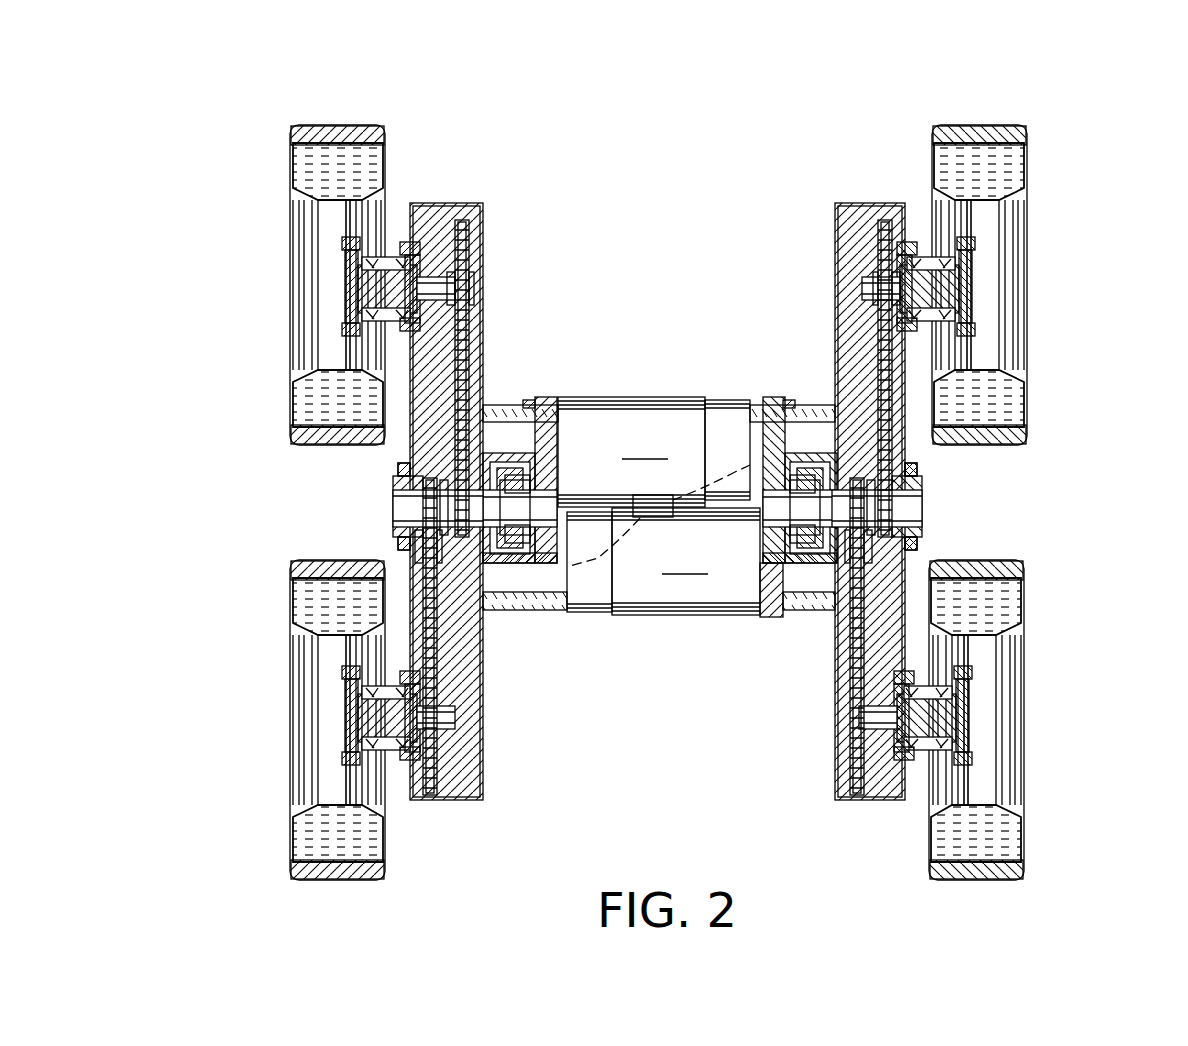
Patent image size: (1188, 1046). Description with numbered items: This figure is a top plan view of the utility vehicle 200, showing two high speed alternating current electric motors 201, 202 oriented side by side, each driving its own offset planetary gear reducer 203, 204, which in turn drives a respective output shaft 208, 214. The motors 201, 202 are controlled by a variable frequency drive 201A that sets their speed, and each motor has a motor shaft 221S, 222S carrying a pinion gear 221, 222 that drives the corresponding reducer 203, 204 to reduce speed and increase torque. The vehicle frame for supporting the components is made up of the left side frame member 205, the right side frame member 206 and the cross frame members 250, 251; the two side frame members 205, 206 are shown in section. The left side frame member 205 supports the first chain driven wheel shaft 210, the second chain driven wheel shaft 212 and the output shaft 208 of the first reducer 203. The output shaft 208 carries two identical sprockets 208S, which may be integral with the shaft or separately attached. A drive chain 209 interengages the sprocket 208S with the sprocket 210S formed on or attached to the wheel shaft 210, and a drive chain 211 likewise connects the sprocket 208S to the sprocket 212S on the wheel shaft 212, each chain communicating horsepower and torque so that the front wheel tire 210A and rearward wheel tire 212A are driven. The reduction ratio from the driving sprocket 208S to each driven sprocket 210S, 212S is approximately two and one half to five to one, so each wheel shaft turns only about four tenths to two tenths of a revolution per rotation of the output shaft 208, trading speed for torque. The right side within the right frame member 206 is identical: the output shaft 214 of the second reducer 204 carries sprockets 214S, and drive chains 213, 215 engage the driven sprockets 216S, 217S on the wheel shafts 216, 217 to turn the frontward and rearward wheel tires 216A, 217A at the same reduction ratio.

The utility vehicle 200 is at (712, 131).
The alternating current motor 201 is at (654, 452).
The variable frequency drive 201A is at (667, 517).
The alternating current motor 202 is at (663, 561).
The offset planetary gear reducer 203 is at (520, 455).
The offset planetary gear reducer 204 is at (805, 600).
The side frame member 205 is at (455, 203).
The side frame member 206 is at (835, 205).
The output shaft 208 is at (395, 510).
The sprocket 208S is at (410, 478).
The drive chain 209 is at (468, 365).
The wheel shaft 210 is at (348, 280).
The wheel tire 210A is at (310, 130).
The sprocket 210S is at (465, 277).
The drive chain 211 is at (440, 628).
The wheel shaft 212 is at (348, 745).
The wheel tire 212A is at (300, 870).
The sprocket 212S is at (438, 730).
The drive chain 213 is at (880, 372).
The output shaft 214 is at (925, 510).
The sprocket 214S is at (912, 478).
The drive chain 215 is at (855, 657).
The wheel shaft 216 is at (970, 282).
The wheel tire 216A is at (1000, 130).
The sprocket 216S is at (876, 277).
The wheel shaft 217 is at (958, 748).
The wheel tire 217A is at (1025, 870).
The sprocket 217S is at (855, 720).
The pinion gear 221 is at (558, 410).
The motor shaft 221S is at (530, 480).
The pinion gear 222 is at (775, 573).
The motor shaft 222S is at (763, 553).
The frame member 250 is at (783, 405).
The frame member 251 is at (533, 610).